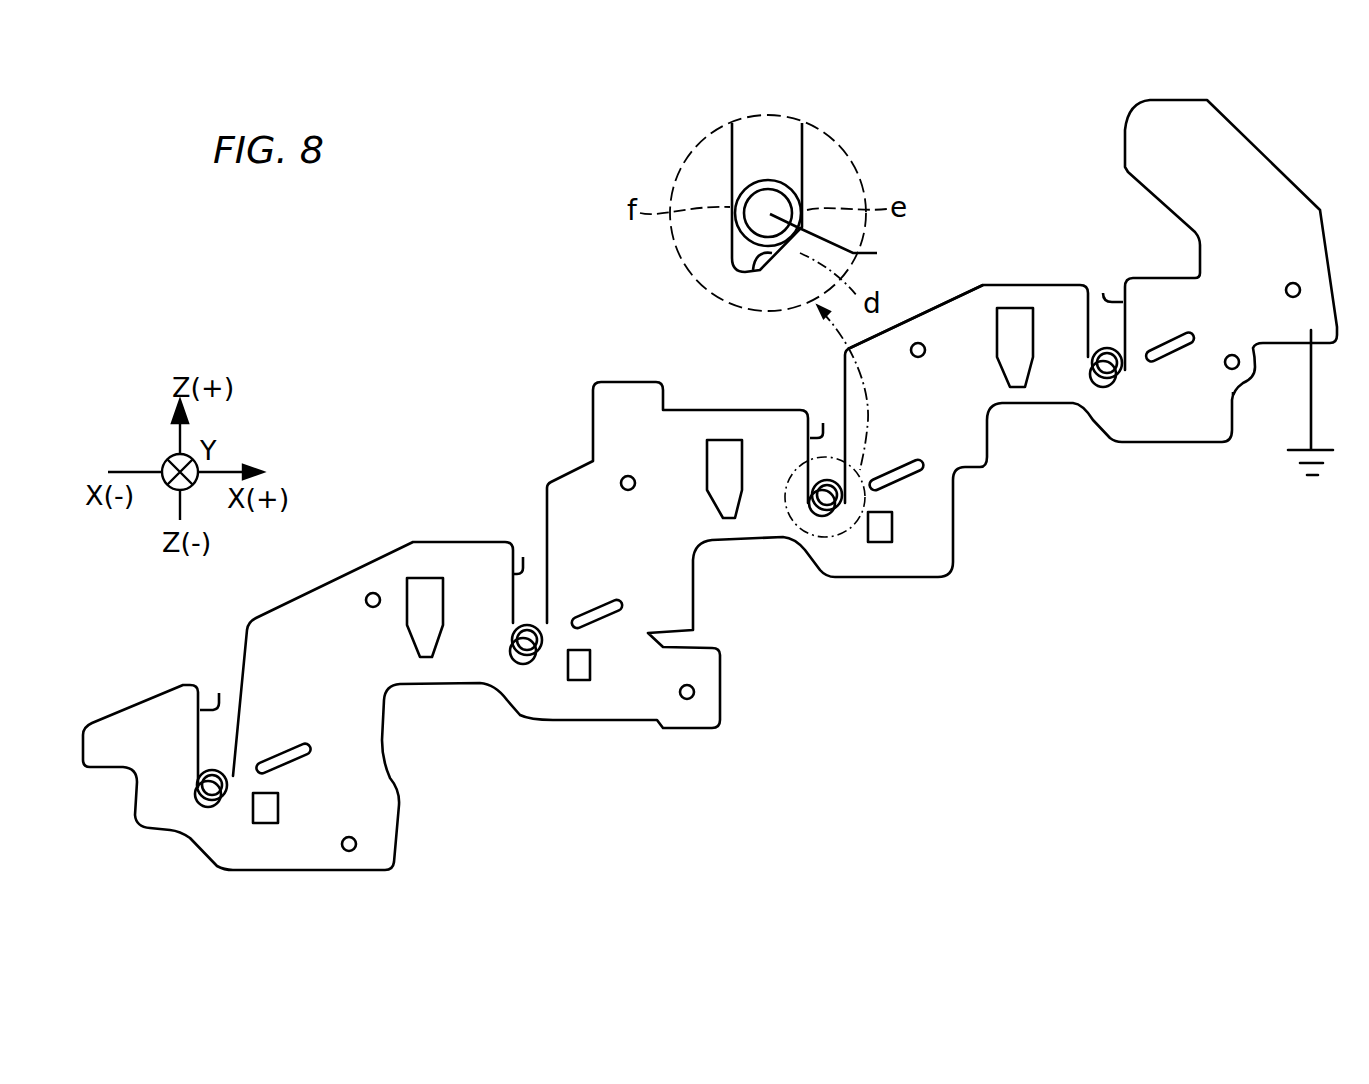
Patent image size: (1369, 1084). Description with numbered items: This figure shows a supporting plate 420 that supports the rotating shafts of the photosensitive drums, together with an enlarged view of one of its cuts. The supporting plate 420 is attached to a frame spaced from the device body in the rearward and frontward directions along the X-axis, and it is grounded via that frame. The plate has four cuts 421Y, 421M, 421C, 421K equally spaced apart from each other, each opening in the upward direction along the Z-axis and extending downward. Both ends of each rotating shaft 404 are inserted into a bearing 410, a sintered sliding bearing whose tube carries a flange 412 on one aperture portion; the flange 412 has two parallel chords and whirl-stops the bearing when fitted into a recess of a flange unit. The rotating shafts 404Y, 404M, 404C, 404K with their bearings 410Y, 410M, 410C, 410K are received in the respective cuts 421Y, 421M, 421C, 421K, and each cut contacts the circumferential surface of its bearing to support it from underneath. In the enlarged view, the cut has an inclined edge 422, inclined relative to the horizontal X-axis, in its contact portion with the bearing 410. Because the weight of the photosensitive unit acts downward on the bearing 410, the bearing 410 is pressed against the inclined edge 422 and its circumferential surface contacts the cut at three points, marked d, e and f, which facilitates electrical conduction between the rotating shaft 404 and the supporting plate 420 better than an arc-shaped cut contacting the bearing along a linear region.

The rotating shaft 404 is at (916, 301).
The rotating shaft (black photosensitive drum) 404K is at (197, 807).
The rotating shaft (cyan photosensitive drum) 404C is at (520, 663).
The rotating shaft (magenta photosensitive drum) 404M is at (813, 503).
The rotating shaft (yellow photosensitive drum) 404Y is at (1100, 377).
The bearing 410 is at (792, 196).
The bearing (black photosensitive drum) 410K is at (212, 787).
The bearing (cyan photosensitive drum) 410C is at (527, 640).
The bearing (magenta photosensitive drum) 410M is at (827, 495).
The bearing (yellow photosensitive drum) 410Y is at (1107, 363).
The flange 412 is at (802, 144).
The supporting plate 420 is at (1195, 427).
The cut (black) 421K is at (219, 693).
The cut (cyan) 421C is at (523, 557).
The cut (magenta) 421M is at (823, 423).
The cut (yellow) 421Y is at (1103, 293).
The inclined edge 422 is at (760, 253).